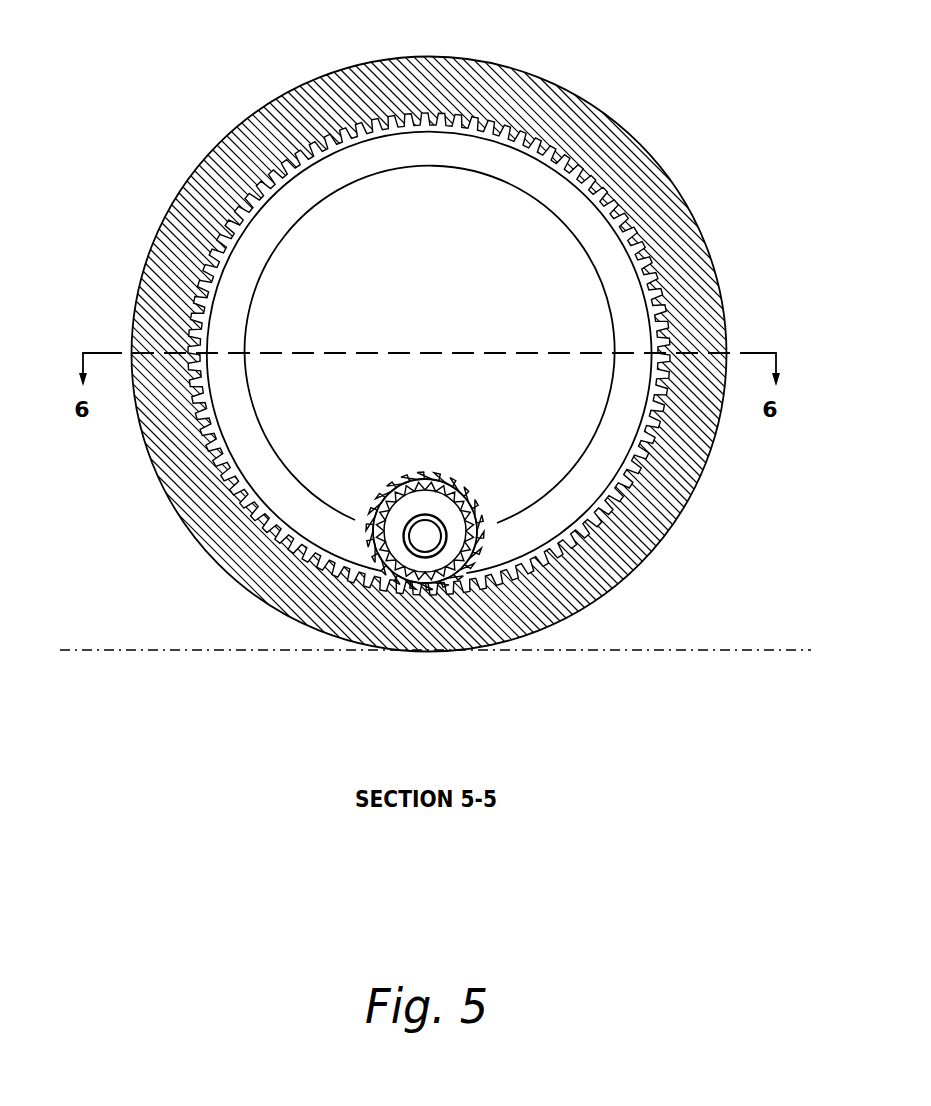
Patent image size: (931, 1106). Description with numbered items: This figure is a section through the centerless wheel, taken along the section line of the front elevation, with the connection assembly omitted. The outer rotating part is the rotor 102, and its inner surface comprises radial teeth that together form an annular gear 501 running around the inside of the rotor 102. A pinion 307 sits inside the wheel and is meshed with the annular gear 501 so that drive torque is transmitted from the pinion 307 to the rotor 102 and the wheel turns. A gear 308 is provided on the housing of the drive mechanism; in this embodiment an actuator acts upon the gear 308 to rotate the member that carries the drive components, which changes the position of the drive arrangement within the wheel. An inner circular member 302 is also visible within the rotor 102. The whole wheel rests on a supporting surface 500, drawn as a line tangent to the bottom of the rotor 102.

The rotor 102 is at (383, 57).
The inner circular member 302 is at (588, 223).
The pinion 307 is at (475, 503).
The gear 308 is at (410, 472).
The annular gear 501 is at (622, 470).
The supporting surface 500 is at (707, 650).